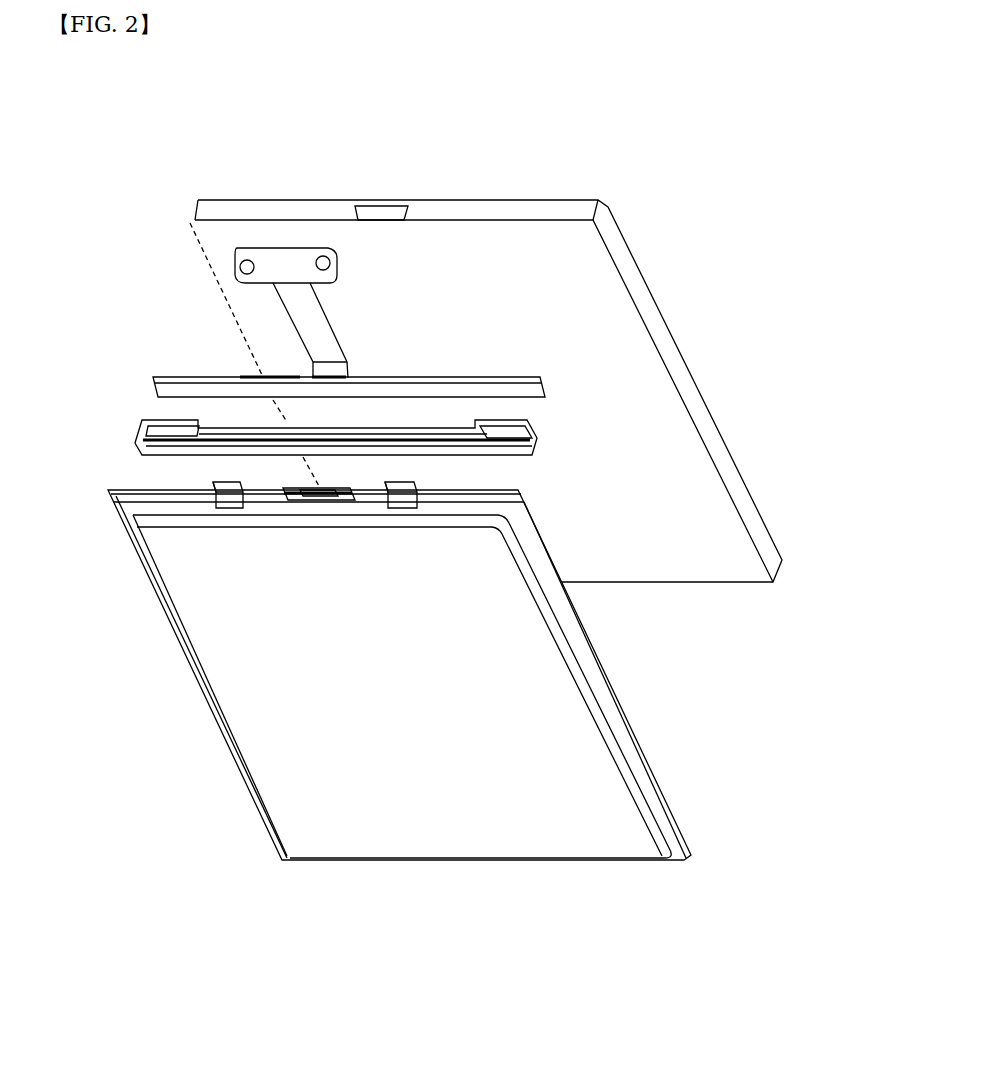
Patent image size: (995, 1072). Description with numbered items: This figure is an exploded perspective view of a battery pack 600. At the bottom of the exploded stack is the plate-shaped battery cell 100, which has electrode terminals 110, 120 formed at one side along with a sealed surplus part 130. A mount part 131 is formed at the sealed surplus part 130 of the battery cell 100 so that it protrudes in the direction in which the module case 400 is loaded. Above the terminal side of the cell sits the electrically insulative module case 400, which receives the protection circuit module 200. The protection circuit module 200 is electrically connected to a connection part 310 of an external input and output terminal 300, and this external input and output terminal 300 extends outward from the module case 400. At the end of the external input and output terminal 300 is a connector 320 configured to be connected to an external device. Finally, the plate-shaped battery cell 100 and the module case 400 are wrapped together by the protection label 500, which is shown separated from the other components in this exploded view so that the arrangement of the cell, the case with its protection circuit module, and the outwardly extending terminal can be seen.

The battery pack 600 is at (165, 187).
The protection label 500 is at (633, 277).
The external input and output terminal 300 is at (203, 313).
The connector 320 is at (282, 272).
The connection part 310 is at (313, 332).
The protection circuit module 200 is at (140, 382).
The module case 400 is at (126, 440).
The battery cell 100 is at (399, 702).
The electrode terminal 110 is at (228, 500).
The electrode terminal 120 is at (393, 498).
The sealed surplus part 130 is at (362, 514).
The mount part 131 is at (311, 514).